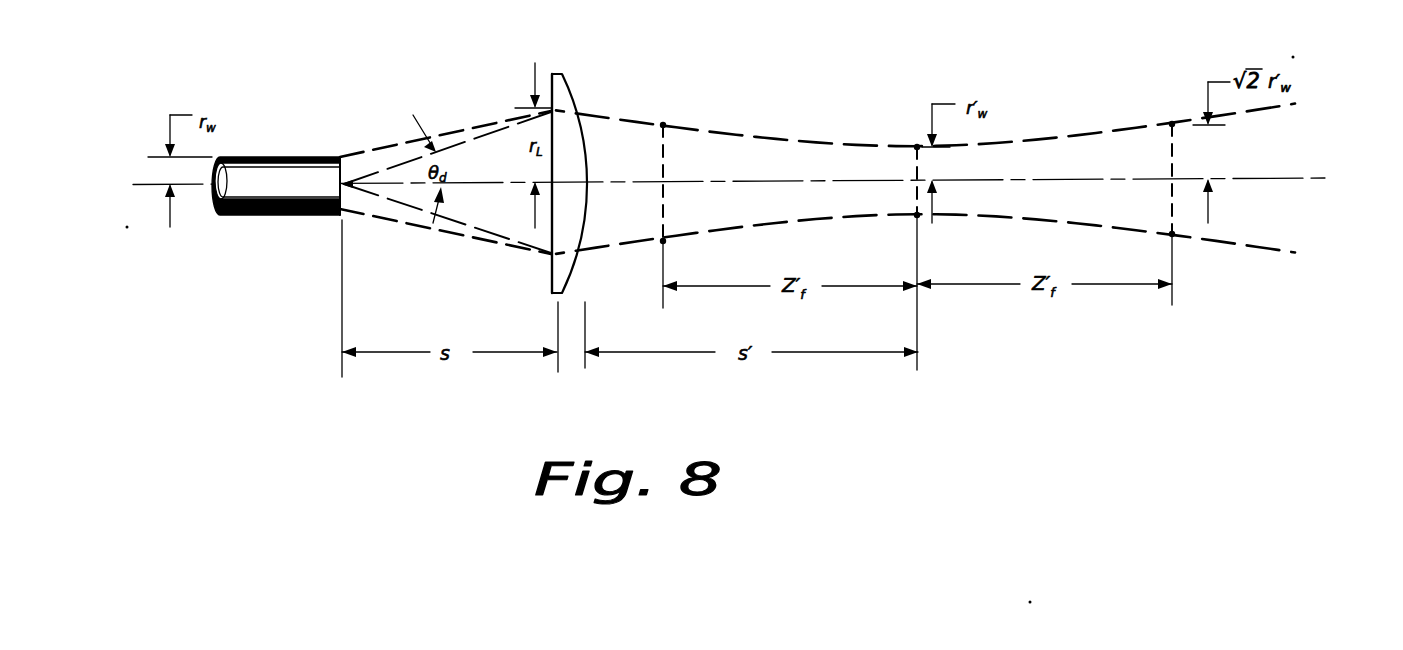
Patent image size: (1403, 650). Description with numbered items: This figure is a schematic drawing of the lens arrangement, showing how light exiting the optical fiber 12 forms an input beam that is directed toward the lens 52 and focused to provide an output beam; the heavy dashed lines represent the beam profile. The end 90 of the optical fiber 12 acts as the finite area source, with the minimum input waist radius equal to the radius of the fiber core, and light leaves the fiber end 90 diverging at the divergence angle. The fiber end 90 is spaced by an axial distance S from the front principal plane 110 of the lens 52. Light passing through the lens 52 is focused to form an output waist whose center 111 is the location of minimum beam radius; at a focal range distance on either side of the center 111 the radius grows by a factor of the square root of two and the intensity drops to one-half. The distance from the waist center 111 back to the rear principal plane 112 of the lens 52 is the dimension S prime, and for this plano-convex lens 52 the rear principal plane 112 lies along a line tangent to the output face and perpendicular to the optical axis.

The optical fiber 12 is at (257, 216).
The optical fiber end 90 is at (346, 210).
The lens 52 is at (567, 231).
The front principal plane 110 is at (558, 372).
The rear principal plane 112 is at (585, 368).
The center of the output beam waist 111 is at (918, 240).